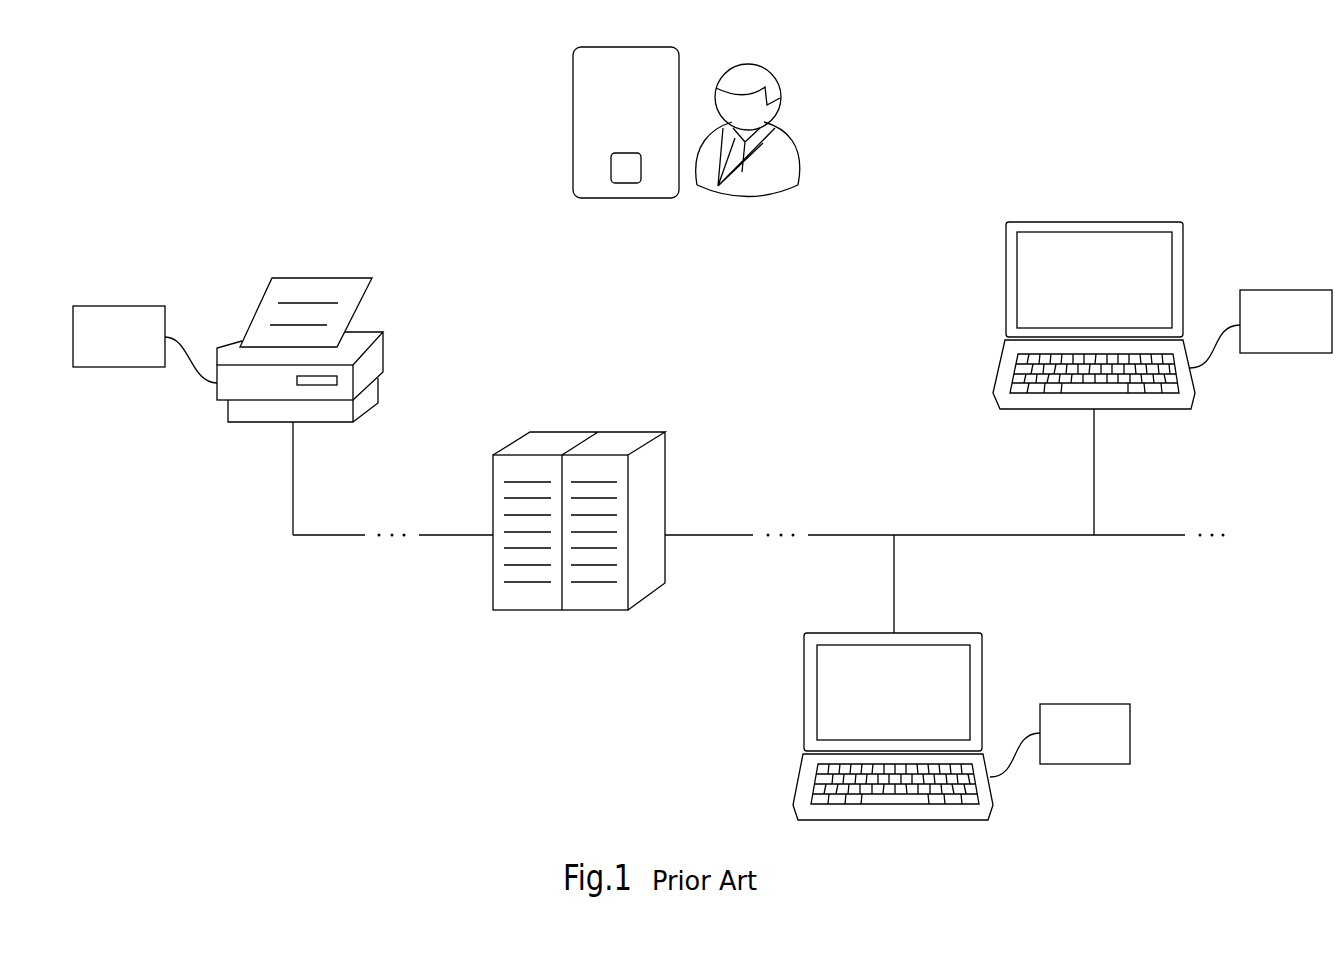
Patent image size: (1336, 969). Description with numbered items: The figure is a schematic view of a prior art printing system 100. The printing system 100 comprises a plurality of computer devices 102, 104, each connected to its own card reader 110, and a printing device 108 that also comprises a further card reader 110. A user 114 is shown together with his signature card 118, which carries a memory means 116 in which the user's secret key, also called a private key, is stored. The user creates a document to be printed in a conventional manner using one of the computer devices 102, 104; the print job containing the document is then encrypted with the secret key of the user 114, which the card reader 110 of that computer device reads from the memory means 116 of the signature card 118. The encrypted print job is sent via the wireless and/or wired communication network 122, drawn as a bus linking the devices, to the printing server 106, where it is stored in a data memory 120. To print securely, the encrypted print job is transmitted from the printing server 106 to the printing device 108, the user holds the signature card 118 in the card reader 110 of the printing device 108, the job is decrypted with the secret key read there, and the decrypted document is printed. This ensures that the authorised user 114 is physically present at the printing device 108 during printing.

The printing system 100 is at (1080, 127).
The computer device 102 is at (1032, 274).
The computer device 104 is at (833, 698).
The printing server 106 is at (621, 564).
The printing device 108 is at (375, 353).
The card reader 110 is at (105, 326).
The user 114 is at (779, 167).
The memory means 116 is at (616, 167).
The signature card 118 is at (616, 105).
The data memory 120 is at (541, 593).
The communication network 122 is at (436, 533).